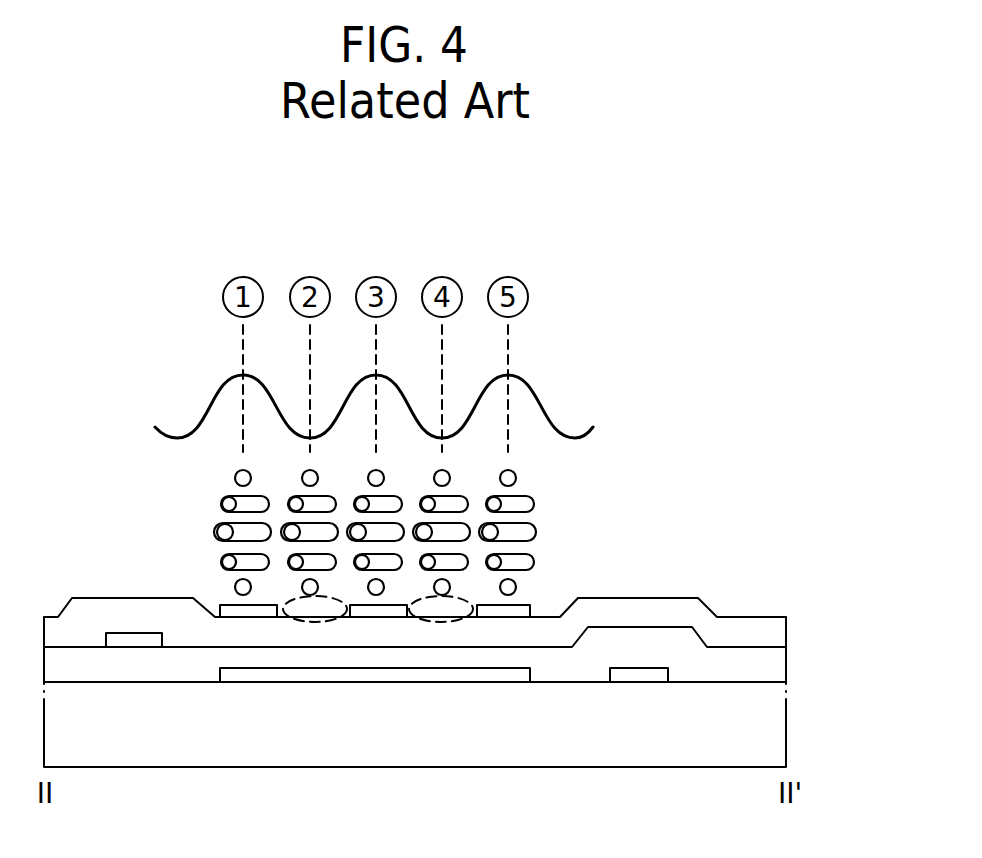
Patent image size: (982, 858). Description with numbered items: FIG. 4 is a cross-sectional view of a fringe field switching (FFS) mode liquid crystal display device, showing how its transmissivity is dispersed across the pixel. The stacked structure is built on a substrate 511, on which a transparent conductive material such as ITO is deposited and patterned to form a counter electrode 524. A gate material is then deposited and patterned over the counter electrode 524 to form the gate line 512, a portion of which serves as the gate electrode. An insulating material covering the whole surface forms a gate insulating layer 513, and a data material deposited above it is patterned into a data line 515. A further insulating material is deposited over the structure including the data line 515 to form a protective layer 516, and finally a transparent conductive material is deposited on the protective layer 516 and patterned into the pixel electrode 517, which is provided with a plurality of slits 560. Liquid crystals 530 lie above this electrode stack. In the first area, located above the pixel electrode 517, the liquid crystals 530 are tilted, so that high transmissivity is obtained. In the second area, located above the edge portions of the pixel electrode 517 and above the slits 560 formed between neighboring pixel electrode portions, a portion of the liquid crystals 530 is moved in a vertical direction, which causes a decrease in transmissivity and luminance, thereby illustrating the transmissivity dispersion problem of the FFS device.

The substrate 511 is at (775, 716).
The gate line 512 is at (642, 682).
The gate insulating layer 513 is at (775, 665).
The data line 515 is at (134, 640).
The protective layer 516 is at (775, 627).
The pixel electrode 517 is at (520, 605).
The counter electrode 524 is at (502, 682).
The liquid crystals 530 is at (523, 503).
The slits 560 is at (307, 622).